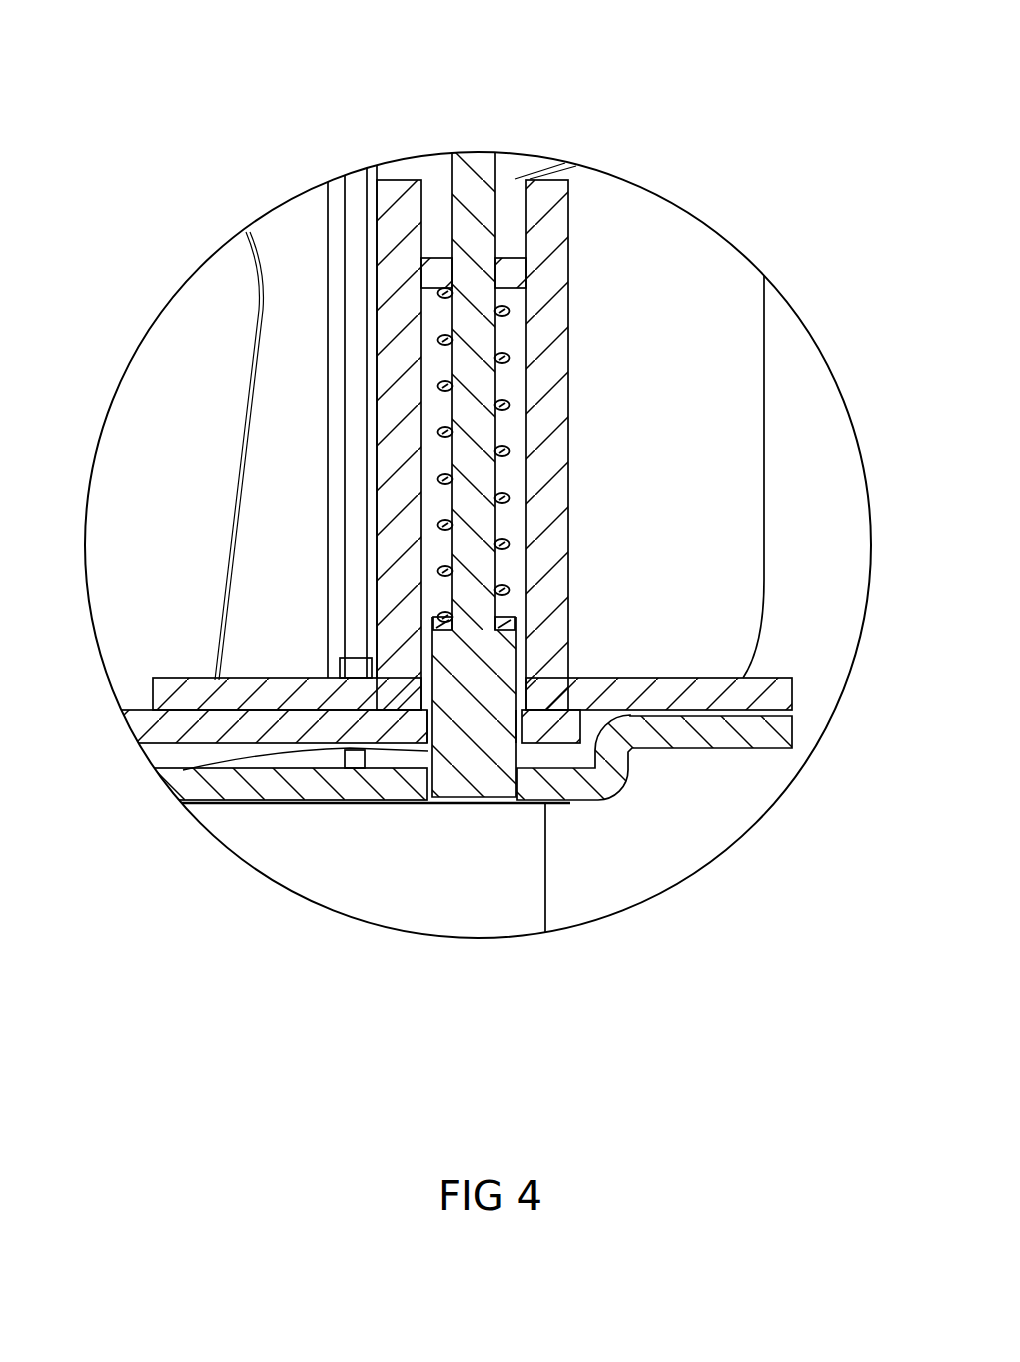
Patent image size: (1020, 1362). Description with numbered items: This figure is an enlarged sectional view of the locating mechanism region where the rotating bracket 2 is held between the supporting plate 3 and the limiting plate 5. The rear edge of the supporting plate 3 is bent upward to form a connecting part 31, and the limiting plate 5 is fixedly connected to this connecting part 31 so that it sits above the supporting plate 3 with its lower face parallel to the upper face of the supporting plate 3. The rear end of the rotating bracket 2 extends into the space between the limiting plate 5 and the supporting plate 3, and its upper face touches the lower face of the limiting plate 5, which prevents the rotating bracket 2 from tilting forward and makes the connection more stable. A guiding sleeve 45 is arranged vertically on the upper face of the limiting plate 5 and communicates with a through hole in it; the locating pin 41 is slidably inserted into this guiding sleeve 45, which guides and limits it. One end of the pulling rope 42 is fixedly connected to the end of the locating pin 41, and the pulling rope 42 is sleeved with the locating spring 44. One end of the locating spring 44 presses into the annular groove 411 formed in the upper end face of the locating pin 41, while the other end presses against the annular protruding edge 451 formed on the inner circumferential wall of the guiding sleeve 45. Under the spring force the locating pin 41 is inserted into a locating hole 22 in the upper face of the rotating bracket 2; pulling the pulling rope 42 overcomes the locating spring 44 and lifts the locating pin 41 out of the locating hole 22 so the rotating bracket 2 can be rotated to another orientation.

The rotating bracket 2 is at (210, 722).
The locating hole 22 is at (421, 730).
The supporting plate 3 is at (268, 783).
The connecting part 31 is at (673, 728).
The locating pin 41 is at (478, 703).
The annular groove 411 is at (433, 620).
The pulling rope 42 is at (473, 260).
The locating spring 44 is at (507, 405).
The guiding sleeve 45 is at (398, 480).
The annular protruding edge 451 is at (510, 273).
The limiting plate 5 is at (202, 697).